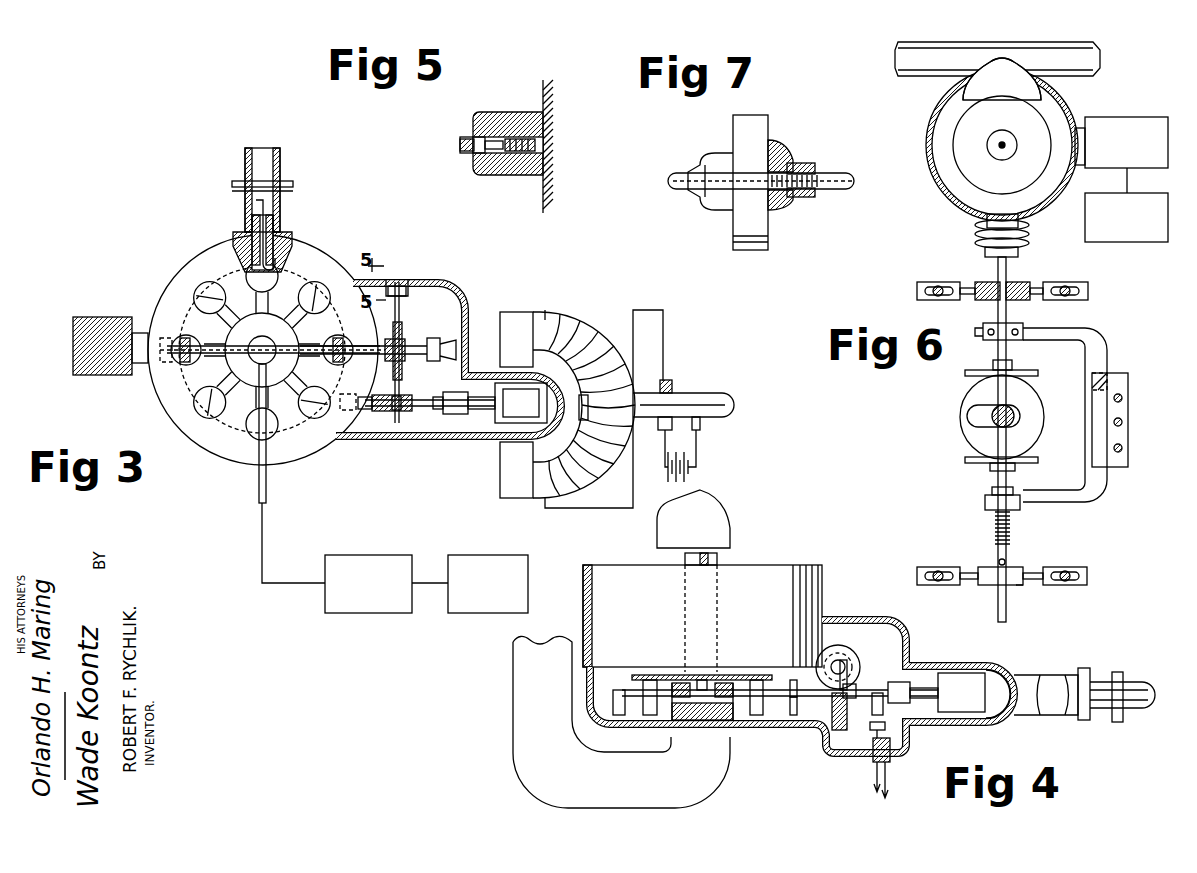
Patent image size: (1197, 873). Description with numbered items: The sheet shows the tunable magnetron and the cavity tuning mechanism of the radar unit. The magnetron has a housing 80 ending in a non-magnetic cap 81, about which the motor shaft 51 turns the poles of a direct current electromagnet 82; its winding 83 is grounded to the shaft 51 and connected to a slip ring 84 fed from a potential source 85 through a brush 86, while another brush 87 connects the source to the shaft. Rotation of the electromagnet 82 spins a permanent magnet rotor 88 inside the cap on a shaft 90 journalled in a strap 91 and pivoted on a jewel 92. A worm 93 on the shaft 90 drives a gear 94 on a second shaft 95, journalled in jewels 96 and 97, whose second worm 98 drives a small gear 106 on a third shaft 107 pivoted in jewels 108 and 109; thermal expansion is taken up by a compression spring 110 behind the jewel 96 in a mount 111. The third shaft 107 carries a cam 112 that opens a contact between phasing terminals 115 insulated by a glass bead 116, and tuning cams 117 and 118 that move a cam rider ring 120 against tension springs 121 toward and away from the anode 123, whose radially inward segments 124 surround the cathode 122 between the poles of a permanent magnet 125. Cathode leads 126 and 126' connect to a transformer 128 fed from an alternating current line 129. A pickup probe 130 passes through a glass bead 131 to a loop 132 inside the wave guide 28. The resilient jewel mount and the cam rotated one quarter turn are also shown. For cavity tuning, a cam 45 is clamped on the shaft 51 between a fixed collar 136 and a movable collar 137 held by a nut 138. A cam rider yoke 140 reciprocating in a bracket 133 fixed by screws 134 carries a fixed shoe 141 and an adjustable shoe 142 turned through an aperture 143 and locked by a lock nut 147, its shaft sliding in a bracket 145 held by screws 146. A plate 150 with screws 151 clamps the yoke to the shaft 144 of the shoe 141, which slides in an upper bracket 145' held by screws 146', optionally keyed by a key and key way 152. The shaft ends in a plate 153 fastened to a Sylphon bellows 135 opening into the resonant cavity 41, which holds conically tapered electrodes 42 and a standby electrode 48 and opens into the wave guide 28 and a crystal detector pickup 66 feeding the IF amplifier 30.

In FIG. 3, the wave guide 28 is at (282, 160).
In FIG. 6, the wave guide 28 is at (1100, 60).
In FIG. 6, the IF amplifier 30 is at (1150, 190).
In FIG. 6, the transmitter-receiver resonant cavity 41 is at (927, 127).
In FIG. 6, the hollow conically tapered electrodes 42 is at (1010, 98).
In FIG. 7, the cam 45 is at (770, 248).
In FIG. 6, the cam 45 is at (1040, 437).
In FIG. 6, the standby electrode 48 is at (1012, 140).
In FIG. 3, the motor shaft 51 is at (703, 420).
In FIG. 7, the motor shaft 51 is at (850, 182).
In FIG. 6, the motor shaft 51 is at (1005, 405).
In FIG. 4, the motor shaft 51 is at (1136, 690).
In FIG. 6, the crystal detector pickup 66 is at (1160, 117).
In FIG. 3, the magnetron housing 80 is at (470, 290).
In FIG. 5, the magnetron housing 80 is at (540, 206).
In FIG. 4, the magnetron housing 80 is at (892, 618).
In FIG. 3, the non-magnetic cap 81 is at (565, 390).
In FIG. 4, the non-magnetic cap 81 is at (1000, 722).
In FIG. 3, the rotatable electromagnet 82 is at (585, 480).
In FIG. 4, the rotatable electromagnet 82 is at (1045, 718).
In FIG. 3, the winding 83 is at (608, 428).
In FIG. 3, the slip ring 84 is at (672, 386).
In FIG. 4, the slip ring 84 is at (1117, 672).
In FIG. 3, the potential source 85 is at (672, 480).
In FIG. 3, the brush 86 is at (662, 432).
In FIG. 3, the brush 87 is at (700, 432).
In FIG. 3, the permanent magnet rotor 88 is at (496, 420).
In FIG. 4, the permanent magnet rotor 88 is at (970, 701).
In FIG. 3, the shaft 90 is at (480, 398).
In FIG. 4, the shaft 90 is at (925, 688).
In FIG. 3, the strap 91 is at (450, 415).
In FIG. 4, the strap 91 is at (897, 682).
In FIG. 3, the jewel 92 is at (360, 380).
In FIG. 3, the worm 93 is at (366, 410).
In FIG. 4, the worm 93 is at (856, 687).
In FIG. 4, the gear 94 is at (832, 714).
In FIG. 3, the second shaft 95 is at (402, 396).
In FIG. 5, the second shaft 95 is at (460, 145).
In FIG. 4, the second shaft 95 is at (850, 668).
In FIG. 3, the jewel 96 is at (402, 298).
In FIG. 5, the jewel 96 is at (500, 135).
In FIG. 3, the jewel 97 is at (395, 413).
In FIG. 3, the second worm 98 is at (402, 330).
In FIG. 4, the second worm 98 is at (845, 652).
In FIG. 3, the small gear 106 is at (405, 358).
In FIG. 3, the third shaft 107 is at (345, 338).
In FIG. 4, the third shaft 107 is at (791, 706).
In FIG. 3, the jewel 108 is at (446, 344).
In FIG. 3, the jewel 109 is at (180, 336).
In FIG. 5, the compression spring 110 is at (545, 142).
In FIG. 3, the mount 111 is at (405, 280).
In FIG. 5, the mount 111 is at (478, 176).
In FIG. 4, the cam 112 is at (872, 712).
In FIG. 4, the phasing terminals 115 is at (872, 732).
In FIG. 4, the glass bead 116 is at (890, 760).
In FIG. 4, the second magnetron tuning cam 117 is at (790, 688).
In FIG. 4, the third magnetron tuning cam 118 is at (622, 718).
In FIG. 3, the magnetron tuning cam rider ring 120 is at (305, 420).
In FIG. 4, the magnetron tuning cam rider ring 120 is at (632, 678).
In FIG. 4, the tension springs 121 is at (728, 682).
In FIG. 3, the magnetron cathode 122 is at (270, 330).
In FIG. 4, the magnetron cathode 122 is at (712, 620).
In FIG. 3, the anode 123 is at (318, 446).
In FIG. 4, the anode 123 is at (822, 588).
In FIG. 3, the segments 124 is at (215, 370).
In FIG. 3, the permanent magnet 125 is at (93, 376).
In FIG. 4, the permanent magnet 125 is at (730, 515).
In FIG. 3, the cathode lead 126 is at (267, 473).
In FIG. 4, the cathode lead 126 is at (727, 555).
In FIG. 4, the cathode lead 126' is at (679, 667).
In FIG. 3, the transformer 128 is at (360, 613).
In FIG. 3, the alternating current line 129 is at (458, 613).
In FIG. 3, the radio frequency pickup probe 130 is at (280, 268).
In FIG. 3, the glass bead 131 is at (282, 228).
In FIG. 3, the loop 132 is at (266, 200).
In FIG. 6, the bracket 133 is at (1128, 385).
In FIG. 6, the screws 134 is at (1122, 400).
In FIG. 6, the Sylphon bellows 135 is at (1030, 233).
In FIG. 7, the fixed collar 136 is at (712, 212).
In FIG. 7, the movable collar 137 is at (793, 208).
In FIG. 7, the nut 138 is at (814, 166).
In FIG. 6, the cam rider yoke 140 is at (1108, 355).
In FIG. 6, the fixed shoe 141 is at (1038, 373).
In FIG. 6, the adjustable shoe 142 is at (1038, 461).
In FIG. 6, the aperture 143 is at (1010, 567).
In FIG. 6, the shaft 144 is at (1012, 362).
In FIG. 6, the bracket 145 is at (1040, 597).
In FIG. 6, the upper bracket 145' is at (988, 304).
In FIG. 6, the screws 146 is at (1002, 565).
In FIG. 6, the screws 146' is at (1002, 280).
In FIG. 6, the lock nut 147 is at (1020, 498).
In FIG. 6, the plate 150 is at (1016, 326).
In FIG. 6, the screws 151 is at (990, 338).
In FIG. 6, the key and key way 152 is at (1008, 282).
In FIG. 6, the plate 153 is at (1018, 252).